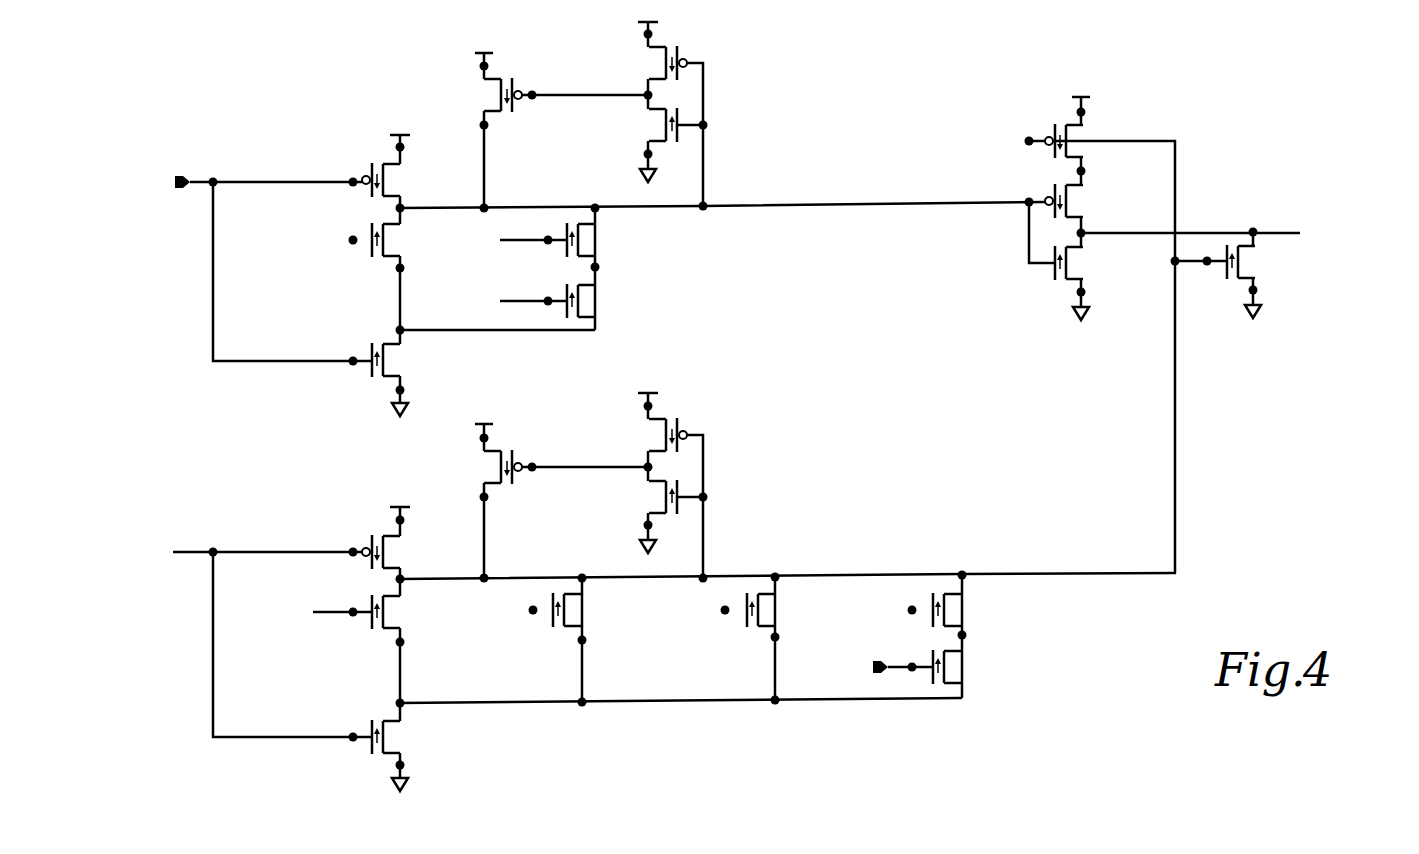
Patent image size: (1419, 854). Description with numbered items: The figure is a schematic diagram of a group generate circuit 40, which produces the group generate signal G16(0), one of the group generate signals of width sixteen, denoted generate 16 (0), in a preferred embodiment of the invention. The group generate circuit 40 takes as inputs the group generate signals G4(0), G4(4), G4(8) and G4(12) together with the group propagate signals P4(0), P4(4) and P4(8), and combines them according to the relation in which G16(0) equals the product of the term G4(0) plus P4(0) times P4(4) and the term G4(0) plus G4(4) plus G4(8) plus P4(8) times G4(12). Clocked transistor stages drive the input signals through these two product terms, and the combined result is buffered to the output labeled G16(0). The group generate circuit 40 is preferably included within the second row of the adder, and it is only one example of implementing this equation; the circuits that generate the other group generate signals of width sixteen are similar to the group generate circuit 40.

The group generate circuit 40 is at (745, 399).
The G4(0) generate input transistor 0 is at (372, 240).
The G4(4) generate input transistor 4 is at (553, 610).
The G4(8) generate input transistor 8 is at (747, 610).
The G4(12) generate input transistor 12 is at (933, 610).
The G16(0) group generate output 16 is at (1249, 267).